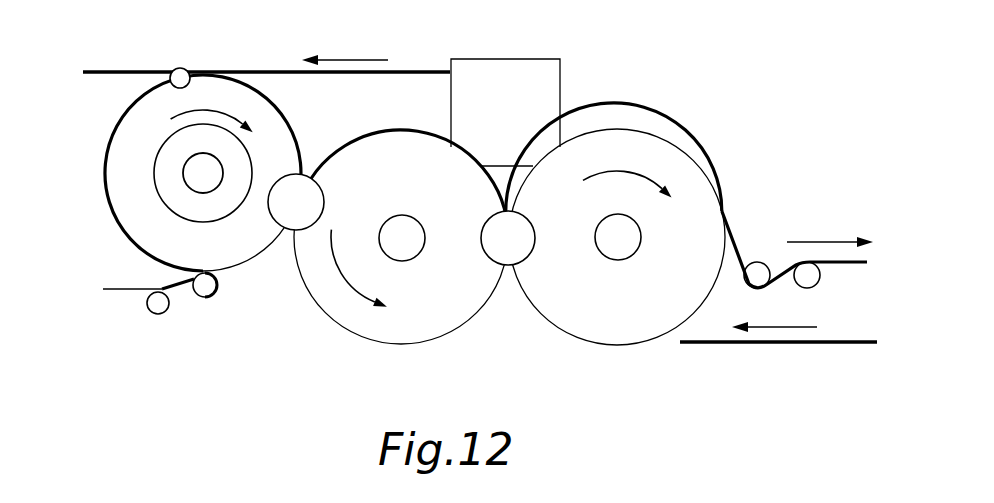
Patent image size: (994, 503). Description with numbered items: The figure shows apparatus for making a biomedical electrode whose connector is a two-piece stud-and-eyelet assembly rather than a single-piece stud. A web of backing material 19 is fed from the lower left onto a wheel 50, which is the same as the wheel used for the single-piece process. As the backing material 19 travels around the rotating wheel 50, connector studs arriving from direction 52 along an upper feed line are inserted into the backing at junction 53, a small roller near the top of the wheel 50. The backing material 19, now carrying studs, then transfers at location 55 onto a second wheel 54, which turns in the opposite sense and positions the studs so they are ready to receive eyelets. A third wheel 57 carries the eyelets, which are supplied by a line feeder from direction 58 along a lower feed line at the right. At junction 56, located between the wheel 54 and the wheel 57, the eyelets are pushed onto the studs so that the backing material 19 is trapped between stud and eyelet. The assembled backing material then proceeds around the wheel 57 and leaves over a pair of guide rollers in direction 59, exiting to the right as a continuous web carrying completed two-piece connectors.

The backing material 19 is at (183, 297).
The wheel 50 is at (120, 187).
The direction of incoming studs 52 is at (370, 57).
The junction 53 is at (178, 74).
The wheel 54 is at (380, 335).
The location 55 is at (290, 212).
The junction 56 is at (508, 248).
The wheel 57 is at (607, 338).
The direction of eyelet feed 58 is at (803, 325).
The direction of travel 59 is at (800, 238).